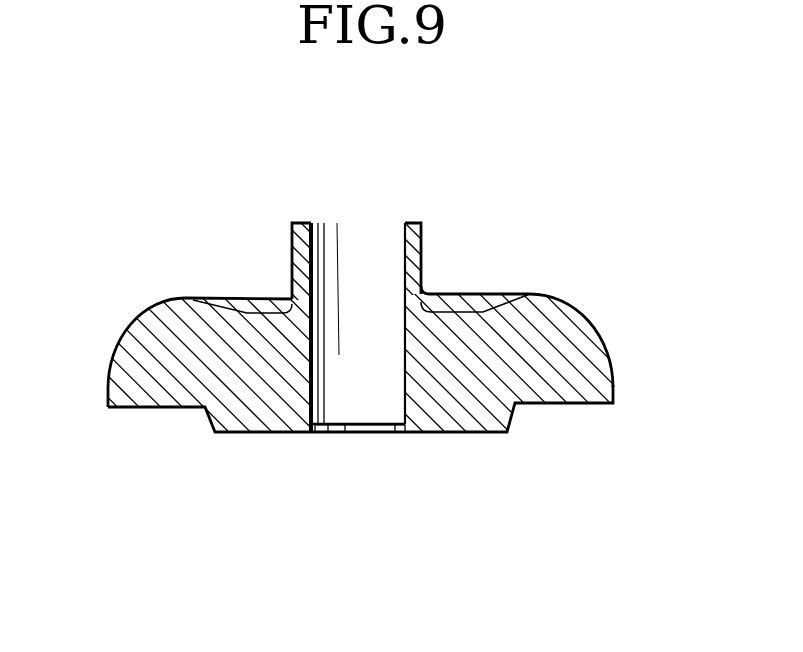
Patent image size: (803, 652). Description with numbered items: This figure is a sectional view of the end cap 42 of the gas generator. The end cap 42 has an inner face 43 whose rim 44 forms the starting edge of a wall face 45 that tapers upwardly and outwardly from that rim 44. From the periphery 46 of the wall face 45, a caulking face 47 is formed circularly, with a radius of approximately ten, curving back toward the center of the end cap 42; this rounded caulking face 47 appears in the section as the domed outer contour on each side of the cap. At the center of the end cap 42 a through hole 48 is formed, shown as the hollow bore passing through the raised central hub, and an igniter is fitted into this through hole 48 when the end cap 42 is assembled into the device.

The end cap 42 is at (337, 222).
The inner face 43 is at (167, 409).
The rim 44 is at (611, 404).
The wall face 45 is at (614, 386).
The periphery 46 is at (107, 379).
The caulking face 47 is at (543, 292).
The through hole 48 is at (404, 262).